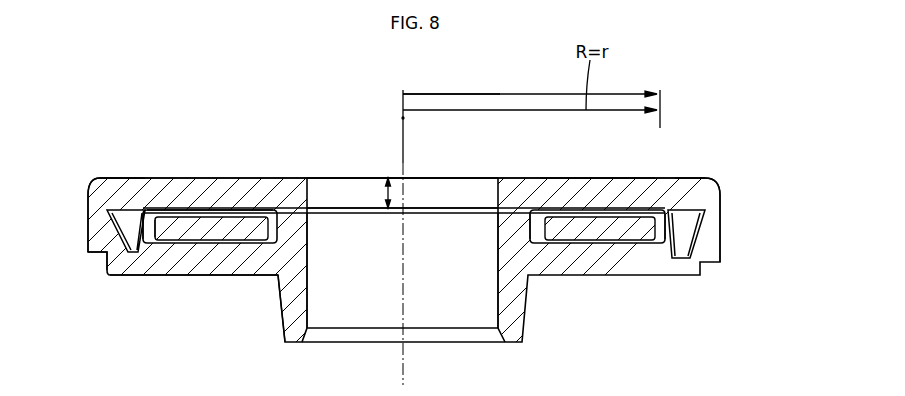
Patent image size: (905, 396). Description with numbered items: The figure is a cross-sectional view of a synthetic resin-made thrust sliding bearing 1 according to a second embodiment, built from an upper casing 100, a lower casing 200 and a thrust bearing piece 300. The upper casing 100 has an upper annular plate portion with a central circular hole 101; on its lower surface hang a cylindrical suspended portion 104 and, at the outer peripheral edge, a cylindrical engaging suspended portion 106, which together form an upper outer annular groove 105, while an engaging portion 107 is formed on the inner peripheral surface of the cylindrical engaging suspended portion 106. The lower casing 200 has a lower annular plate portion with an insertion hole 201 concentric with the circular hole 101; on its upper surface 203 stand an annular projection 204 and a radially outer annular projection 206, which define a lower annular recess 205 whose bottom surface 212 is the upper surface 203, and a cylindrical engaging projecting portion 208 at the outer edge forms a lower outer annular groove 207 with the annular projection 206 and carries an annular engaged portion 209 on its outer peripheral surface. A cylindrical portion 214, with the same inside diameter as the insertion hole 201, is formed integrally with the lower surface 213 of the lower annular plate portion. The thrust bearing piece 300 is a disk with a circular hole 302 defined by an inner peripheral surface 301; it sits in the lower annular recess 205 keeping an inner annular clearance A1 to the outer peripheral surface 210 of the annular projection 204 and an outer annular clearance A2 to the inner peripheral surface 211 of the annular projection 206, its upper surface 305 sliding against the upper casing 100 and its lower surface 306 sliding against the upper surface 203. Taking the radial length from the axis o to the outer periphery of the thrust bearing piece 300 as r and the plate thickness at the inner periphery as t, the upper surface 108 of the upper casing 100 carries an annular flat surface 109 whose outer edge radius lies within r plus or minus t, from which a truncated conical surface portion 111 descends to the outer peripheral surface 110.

The synthetic resin-made thrust sliding bearing 1 is at (129, 174).
The upper casing 100 is at (518, 180).
The circular hole 101 is at (443, 178).
The cylindrical suspended portion 104 is at (665, 262).
The upper outer annular groove 105 is at (712, 190).
The cylindrical engaging suspended portion 106 is at (712, 222).
The engaging portion 107 is at (698, 270).
The upper surface 108 is at (568, 180).
The annular flat surface 109 is at (610, 180).
The outer peripheral surface 110 is at (100, 232).
The truncated conical surface portion 111 is at (688, 182).
The lower casing 200 is at (205, 255).
The insertion hole 201 is at (386, 312).
The upper surface 203 is at (270, 242).
The annular projection 204 is at (292, 238).
The lower annular recess 205 is at (166, 212).
The annular projection 206 is at (150, 211).
The lower outer annular groove 207 is at (130, 262).
The cylindrical engaging projecting portion 208 is at (142, 184).
The annular engaged portion 209 is at (105, 250).
The outer peripheral surface 210 is at (246, 211).
The inner peripheral surface 211 is at (162, 212).
The bottom surface 212 is at (238, 244).
The lower surface 213 is at (168, 275).
The cylindrical portion 214 is at (293, 305).
The thrust bearing piece 300 is at (585, 262).
The inner peripheral surface 301 is at (498, 240).
The circular hole 302 is at (438, 211).
The upper surface 305 is at (640, 185).
The lower surface 306 is at (562, 272).
The inner annular clearance A1 is at (533, 262).
The outer annular clearance A2 is at (620, 265).
The axis o is at (402, 118).
The thickness t is at (373, 178).
The radial length r is at (518, 93).